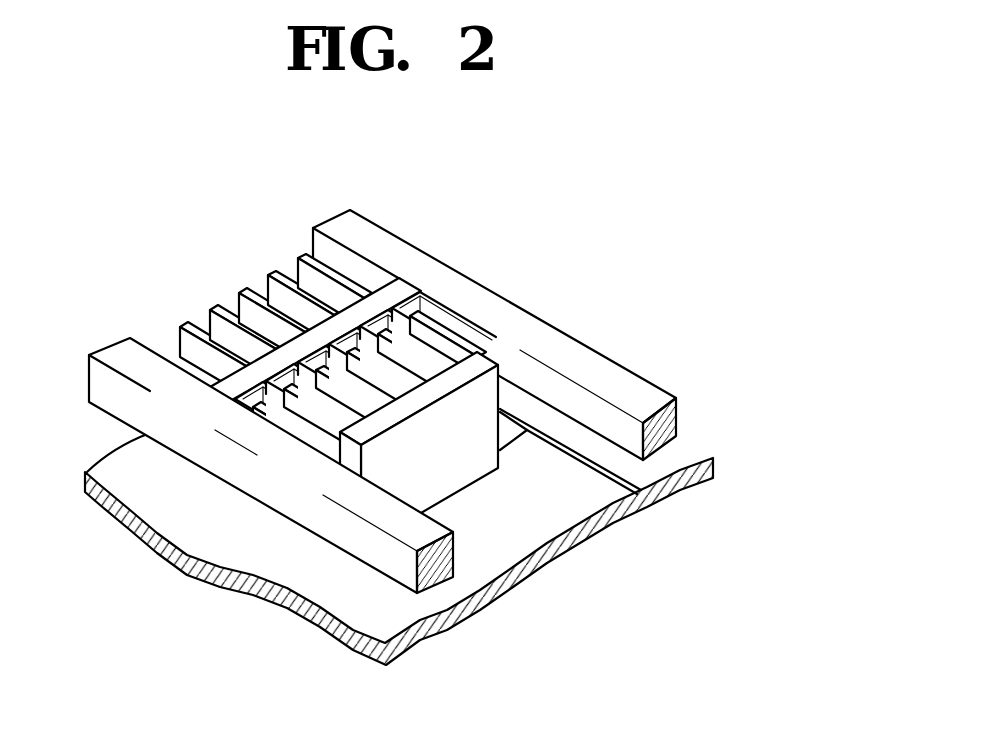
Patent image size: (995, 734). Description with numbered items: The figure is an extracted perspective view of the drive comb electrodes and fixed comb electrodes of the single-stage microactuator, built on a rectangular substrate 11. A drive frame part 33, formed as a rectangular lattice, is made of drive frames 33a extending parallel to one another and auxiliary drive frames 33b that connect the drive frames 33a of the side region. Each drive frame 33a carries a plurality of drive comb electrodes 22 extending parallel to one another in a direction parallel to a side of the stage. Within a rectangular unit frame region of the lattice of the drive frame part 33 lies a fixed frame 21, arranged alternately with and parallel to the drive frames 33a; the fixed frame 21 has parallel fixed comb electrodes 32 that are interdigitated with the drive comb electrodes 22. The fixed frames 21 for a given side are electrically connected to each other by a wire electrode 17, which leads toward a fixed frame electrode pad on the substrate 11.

The substrate 11 is at (447, 608).
The wire electrode 17 is at (627, 490).
The fixed frame 21 is at (477, 460).
The drive comb electrode 22 is at (280, 280).
The fixed comb electrode 32 is at (465, 325).
The drive frame part 33 is at (428, 295).
The drive frame 33a is at (393, 297).
The auxiliary drive frame 33b is at (383, 236).